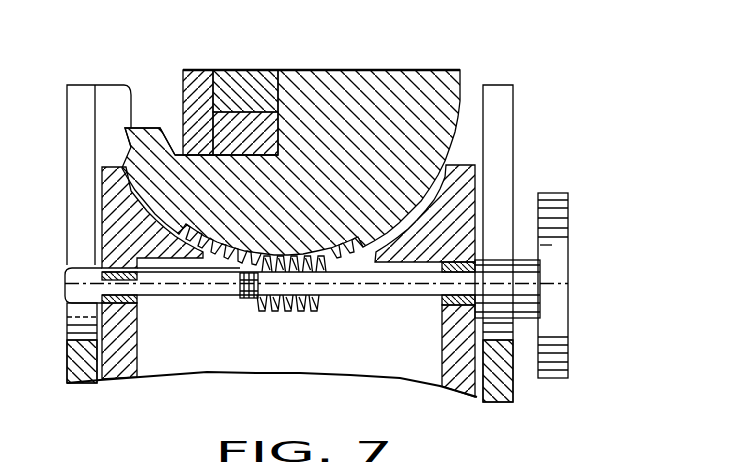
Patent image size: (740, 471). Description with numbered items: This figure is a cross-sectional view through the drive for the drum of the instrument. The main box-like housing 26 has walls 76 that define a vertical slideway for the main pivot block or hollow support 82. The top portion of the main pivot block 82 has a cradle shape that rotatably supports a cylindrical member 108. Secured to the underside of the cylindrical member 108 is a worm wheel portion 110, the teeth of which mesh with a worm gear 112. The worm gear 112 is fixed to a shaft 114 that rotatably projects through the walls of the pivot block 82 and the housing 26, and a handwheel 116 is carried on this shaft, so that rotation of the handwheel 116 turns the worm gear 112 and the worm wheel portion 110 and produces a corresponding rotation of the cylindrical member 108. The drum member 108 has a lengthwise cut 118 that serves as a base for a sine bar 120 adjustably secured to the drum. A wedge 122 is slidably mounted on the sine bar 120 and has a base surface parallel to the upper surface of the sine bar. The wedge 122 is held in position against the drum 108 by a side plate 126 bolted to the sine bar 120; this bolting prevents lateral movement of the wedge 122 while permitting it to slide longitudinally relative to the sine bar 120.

The main box-like housing 26 is at (487, 400).
The walls of the housing 76 is at (80, 370).
The main pivot block 82 is at (455, 342).
The cylindrical member 108 is at (352, 98).
The worm wheel portion 110 is at (228, 258).
The worm gear 112 is at (280, 303).
The shaft 114 is at (363, 283).
The handwheel 116 is at (557, 233).
The lengthwise cut 118 is at (233, 153).
The sine bar 120 is at (265, 122).
The wedge 122 is at (252, 83).
The side plate 126 is at (197, 75).